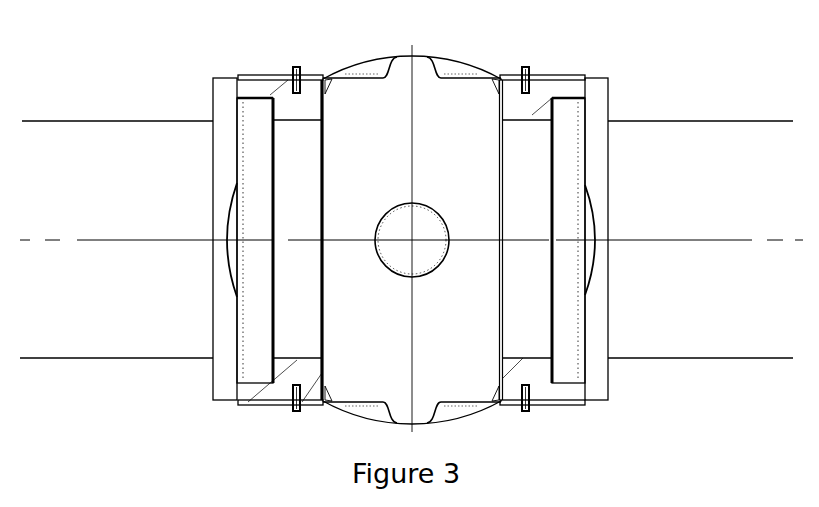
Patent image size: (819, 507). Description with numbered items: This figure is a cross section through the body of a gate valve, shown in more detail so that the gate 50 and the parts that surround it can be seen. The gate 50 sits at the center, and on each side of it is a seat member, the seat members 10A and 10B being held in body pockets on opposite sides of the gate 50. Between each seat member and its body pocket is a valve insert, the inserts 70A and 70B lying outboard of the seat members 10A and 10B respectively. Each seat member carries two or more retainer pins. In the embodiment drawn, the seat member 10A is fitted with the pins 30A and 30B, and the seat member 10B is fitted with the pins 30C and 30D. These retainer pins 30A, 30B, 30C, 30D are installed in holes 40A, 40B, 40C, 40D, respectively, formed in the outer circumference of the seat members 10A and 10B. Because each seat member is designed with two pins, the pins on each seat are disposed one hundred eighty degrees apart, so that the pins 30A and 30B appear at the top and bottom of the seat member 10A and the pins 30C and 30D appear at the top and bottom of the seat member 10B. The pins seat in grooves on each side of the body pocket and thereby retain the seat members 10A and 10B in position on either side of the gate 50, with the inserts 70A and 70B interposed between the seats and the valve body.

The seat member 10A is at (310, 88).
The seat member 10B is at (527, 87).
The retainer pin 30A is at (295, 70).
The retainer pin 30B is at (293, 403).
The retainer pin 30C is at (527, 68).
The retainer pin 30D is at (528, 412).
The hole 40A is at (307, 107).
The hole 40B is at (300, 395).
The hole 40C is at (517, 90).
The hole 40D is at (517, 390).
The gate 50 is at (406, 324).
The insert 70A is at (262, 115).
The insert 70B is at (560, 110).